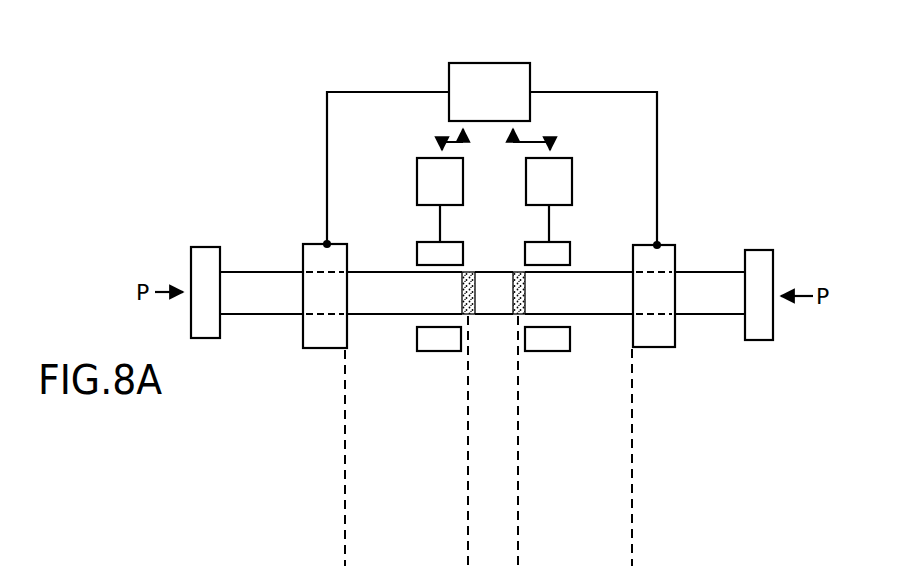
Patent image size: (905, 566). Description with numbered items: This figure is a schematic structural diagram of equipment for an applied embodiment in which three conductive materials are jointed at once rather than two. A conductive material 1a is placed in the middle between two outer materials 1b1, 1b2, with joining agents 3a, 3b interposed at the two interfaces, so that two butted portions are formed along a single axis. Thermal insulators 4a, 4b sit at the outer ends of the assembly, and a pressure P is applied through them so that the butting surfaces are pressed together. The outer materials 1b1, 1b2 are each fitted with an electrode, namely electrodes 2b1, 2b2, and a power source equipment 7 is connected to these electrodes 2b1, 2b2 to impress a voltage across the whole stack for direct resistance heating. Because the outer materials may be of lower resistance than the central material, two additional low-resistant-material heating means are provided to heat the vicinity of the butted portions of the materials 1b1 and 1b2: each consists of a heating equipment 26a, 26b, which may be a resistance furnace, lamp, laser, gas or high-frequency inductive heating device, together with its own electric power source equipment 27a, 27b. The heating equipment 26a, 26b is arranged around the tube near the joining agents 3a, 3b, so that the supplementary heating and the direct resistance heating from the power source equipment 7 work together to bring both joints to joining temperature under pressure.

The power source equipment 7 is at (499, 70).
The electric power source equipment 27a is at (424, 170).
The electric power source equipment 27b is at (562, 170).
The heating equipment 26a is at (424, 258).
The heating equipment 26b is at (560, 255).
The conductive material 1a is at (493, 288).
The joining agent 3a is at (479, 298).
The joining agent 3b is at (510, 298).
The material 1b1 is at (252, 278).
The material 1b2 is at (708, 282).
The thermal insulator 4a is at (208, 250).
The thermal insulator 4b is at (758, 255).
The electrode 2b1 is at (323, 348).
The electrode 2b2 is at (655, 342).